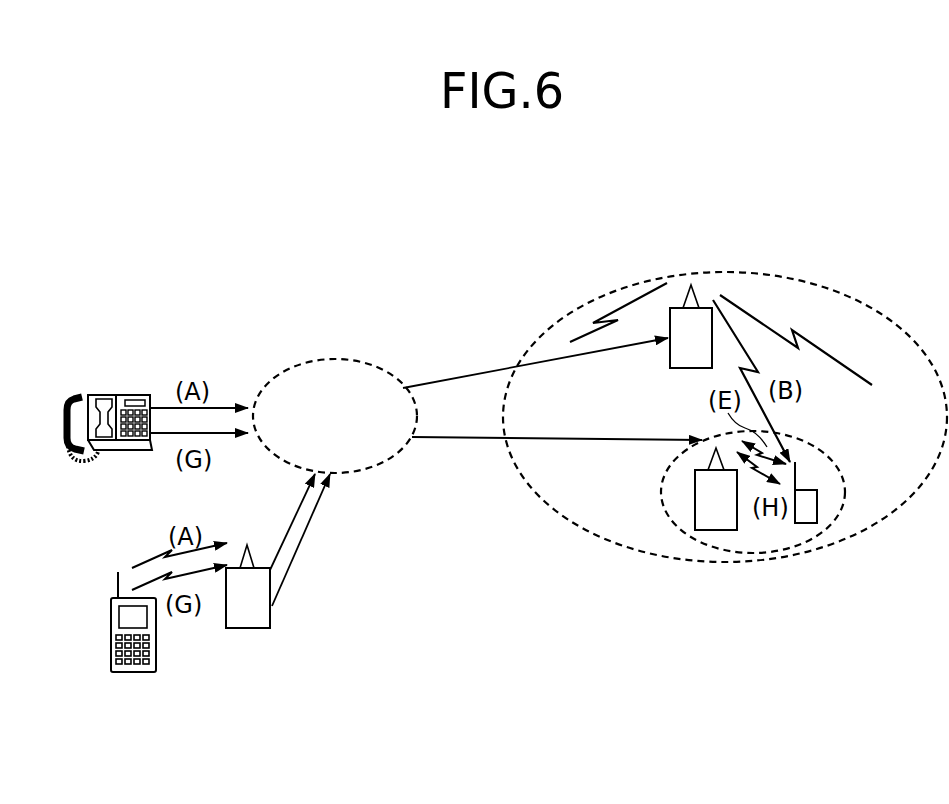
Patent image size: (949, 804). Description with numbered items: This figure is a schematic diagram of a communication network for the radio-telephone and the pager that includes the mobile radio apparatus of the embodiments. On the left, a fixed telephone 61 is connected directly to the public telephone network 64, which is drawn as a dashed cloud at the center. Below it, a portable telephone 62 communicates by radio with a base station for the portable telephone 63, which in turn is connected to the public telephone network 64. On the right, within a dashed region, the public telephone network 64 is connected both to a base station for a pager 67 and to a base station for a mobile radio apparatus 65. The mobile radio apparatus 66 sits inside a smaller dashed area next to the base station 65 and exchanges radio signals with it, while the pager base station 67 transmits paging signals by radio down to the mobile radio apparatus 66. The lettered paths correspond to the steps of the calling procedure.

The telephone 61 is at (100, 395).
The portable telephone 62 is at (156, 660).
The base station 63 is at (270, 622).
The network 64 is at (327, 360).
The base station 65 is at (695, 490).
The portable telephone 66 is at (800, 486).
The base station 67 is at (672, 368).